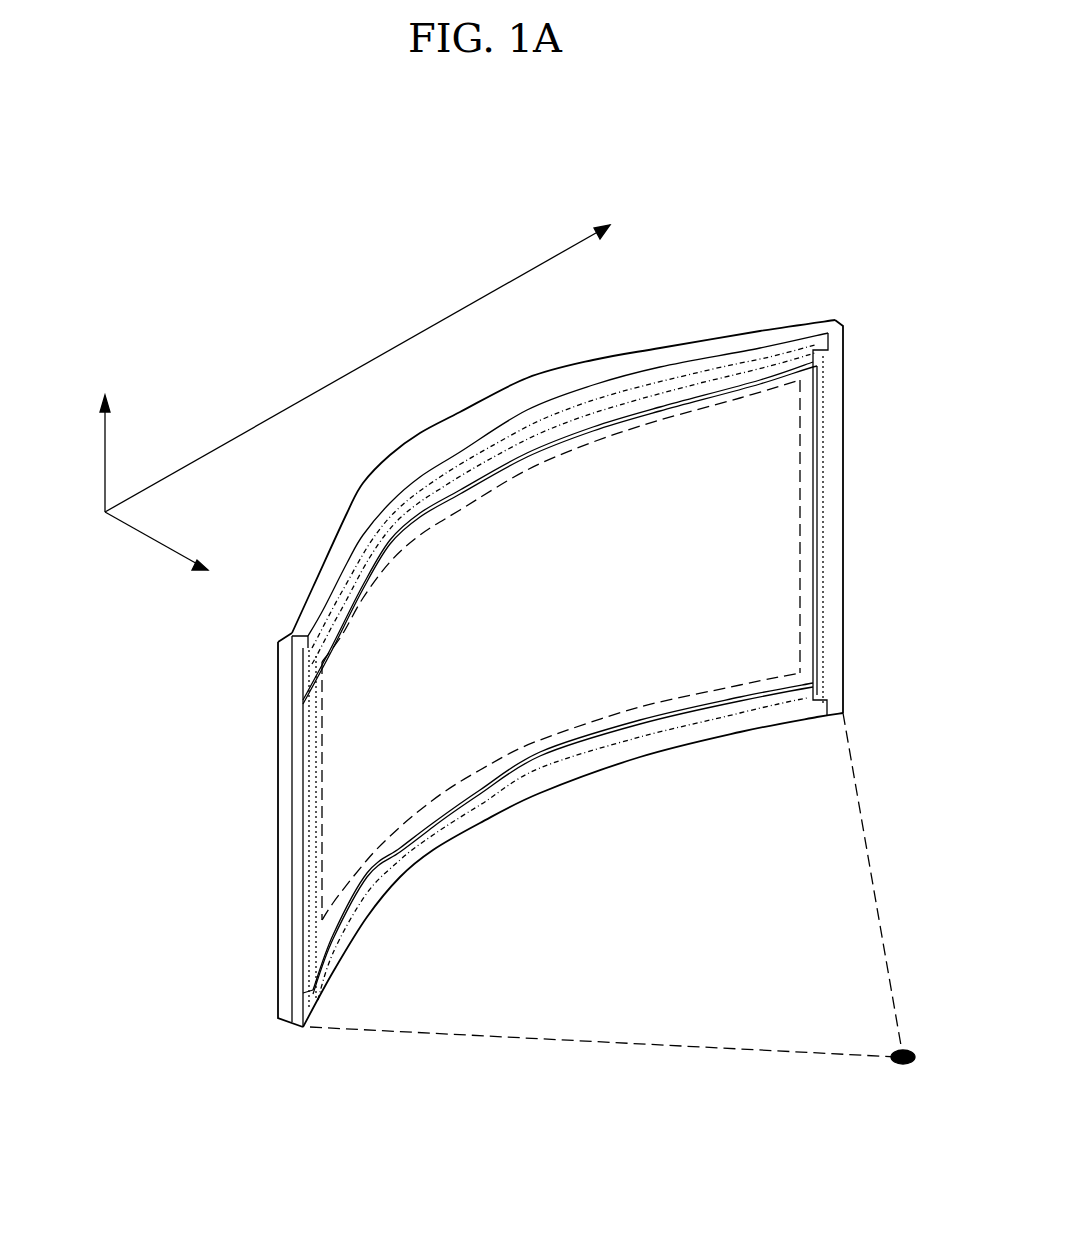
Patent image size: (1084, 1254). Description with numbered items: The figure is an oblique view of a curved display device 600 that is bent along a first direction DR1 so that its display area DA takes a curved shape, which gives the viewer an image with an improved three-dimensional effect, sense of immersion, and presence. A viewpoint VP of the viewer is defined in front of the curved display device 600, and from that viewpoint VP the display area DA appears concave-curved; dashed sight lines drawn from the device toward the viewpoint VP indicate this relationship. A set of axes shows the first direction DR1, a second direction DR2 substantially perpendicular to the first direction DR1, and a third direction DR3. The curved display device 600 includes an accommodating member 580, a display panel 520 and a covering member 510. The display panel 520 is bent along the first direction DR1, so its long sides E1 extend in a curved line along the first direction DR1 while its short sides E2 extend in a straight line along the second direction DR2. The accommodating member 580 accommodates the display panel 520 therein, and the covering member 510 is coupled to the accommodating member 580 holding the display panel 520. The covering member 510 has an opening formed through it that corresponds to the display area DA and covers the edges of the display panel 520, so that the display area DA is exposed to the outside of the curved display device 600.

The curved display device 600 is at (850, 316).
The covering member 510 is at (838, 506).
The display panel 520 is at (762, 543).
The accommodating member 580 is at (655, 355).
The long sides E1 is at (487, 460).
The short sides E2 is at (310, 850).
The display area DA is at (557, 730).
The viewpoint VP is at (614, 905).
The first direction DR1 is at (383, 355).
The second direction DR2 is at (106, 440).
The third direction DR3 is at (182, 551).